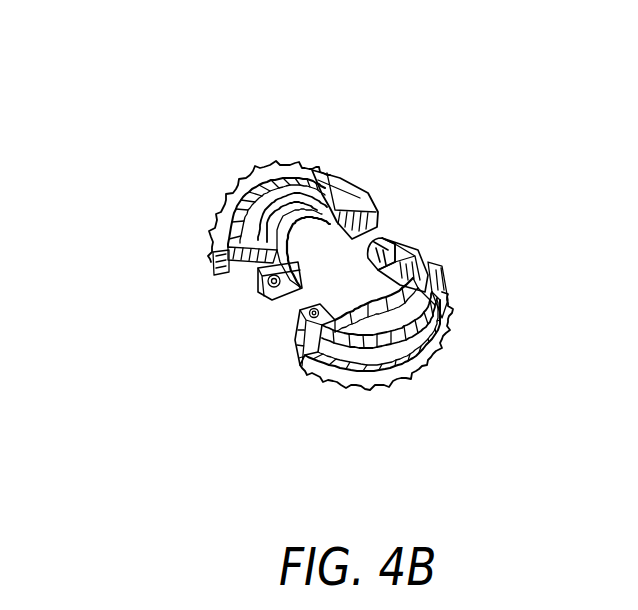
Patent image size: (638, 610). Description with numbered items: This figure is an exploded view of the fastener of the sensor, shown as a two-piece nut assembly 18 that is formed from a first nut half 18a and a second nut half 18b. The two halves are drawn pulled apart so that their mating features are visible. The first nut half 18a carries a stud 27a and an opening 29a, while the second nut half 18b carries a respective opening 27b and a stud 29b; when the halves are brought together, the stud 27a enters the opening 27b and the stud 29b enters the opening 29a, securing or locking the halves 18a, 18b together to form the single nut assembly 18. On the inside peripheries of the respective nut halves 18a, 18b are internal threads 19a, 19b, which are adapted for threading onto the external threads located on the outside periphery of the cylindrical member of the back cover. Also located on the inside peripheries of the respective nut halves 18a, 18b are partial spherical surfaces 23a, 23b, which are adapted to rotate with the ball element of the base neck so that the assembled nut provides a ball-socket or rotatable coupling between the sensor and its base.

The nut assembly 18 is at (118, 383).
The first nut half 18a is at (243, 170).
The second nut half 18b is at (446, 348).
The internal threads 19a is at (227, 262).
The internal threads 19b is at (368, 378).
The partial spherical surface 23a is at (323, 172).
The partial spherical surface 23b is at (398, 250).
The stud 27a is at (397, 250).
The opening 27b is at (425, 262).
The opening 29a is at (264, 294).
The stud 29b is at (308, 307).